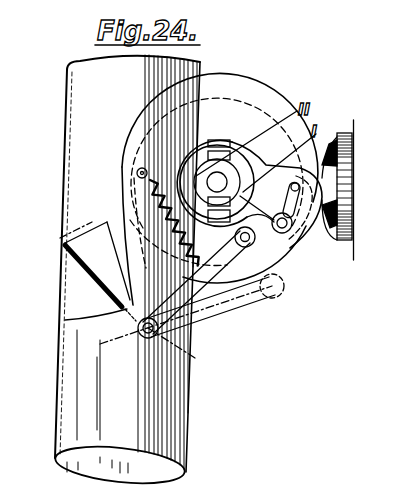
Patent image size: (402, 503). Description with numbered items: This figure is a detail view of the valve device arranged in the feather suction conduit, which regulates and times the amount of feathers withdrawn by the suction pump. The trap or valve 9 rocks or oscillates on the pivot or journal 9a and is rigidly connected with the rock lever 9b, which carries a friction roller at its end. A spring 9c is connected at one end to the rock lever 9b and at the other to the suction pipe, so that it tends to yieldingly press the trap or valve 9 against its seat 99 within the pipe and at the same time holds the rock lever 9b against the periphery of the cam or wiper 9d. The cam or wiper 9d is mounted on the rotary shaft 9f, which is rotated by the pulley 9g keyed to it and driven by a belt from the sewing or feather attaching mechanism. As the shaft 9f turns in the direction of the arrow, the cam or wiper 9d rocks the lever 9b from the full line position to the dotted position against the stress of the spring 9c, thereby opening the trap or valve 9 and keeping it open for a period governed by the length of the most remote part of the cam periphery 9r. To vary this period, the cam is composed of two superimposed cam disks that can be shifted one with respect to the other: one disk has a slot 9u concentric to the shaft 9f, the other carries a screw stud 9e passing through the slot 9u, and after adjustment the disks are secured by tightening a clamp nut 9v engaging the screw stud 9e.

The trap or valve 9 is at (64, 260).
The seat 99 is at (85, 273).
The pivot or journal 9a is at (140, 339).
The rock lever 9b is at (197, 295).
The spring 9c is at (137, 173).
The cam or wiper 9d is at (270, 148).
The screw stud 9e is at (290, 231).
The rotary shaft 9f is at (213, 178).
The pulley 9g is at (228, 95).
The cam periphery 9r is at (347, 221).
The slot 9u is at (300, 187).
The clamp nut 9v is at (279, 290).